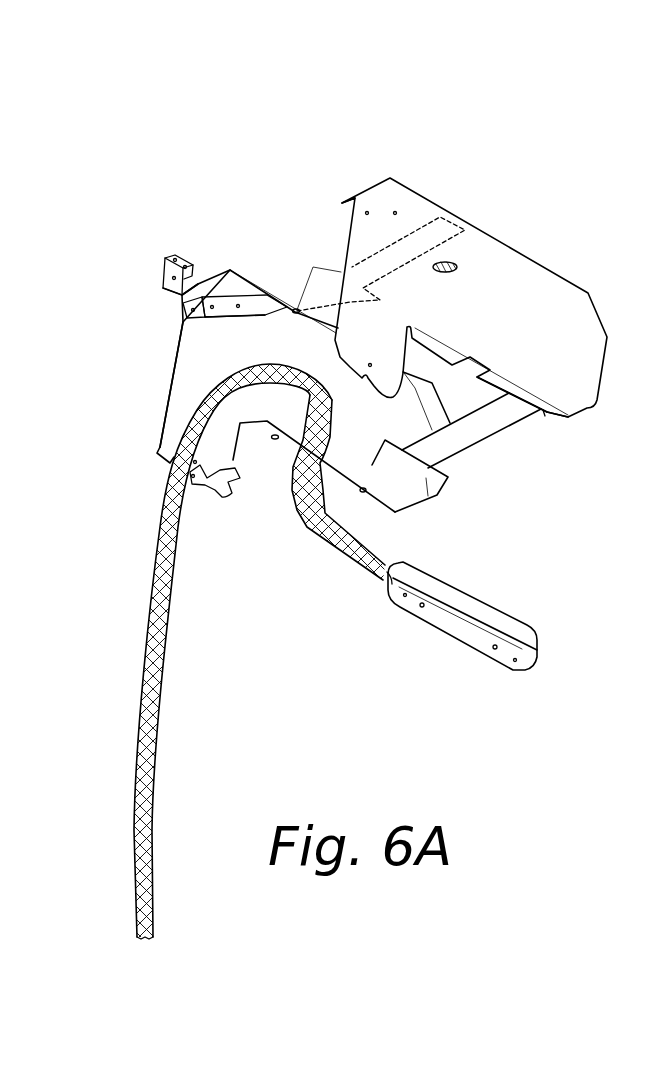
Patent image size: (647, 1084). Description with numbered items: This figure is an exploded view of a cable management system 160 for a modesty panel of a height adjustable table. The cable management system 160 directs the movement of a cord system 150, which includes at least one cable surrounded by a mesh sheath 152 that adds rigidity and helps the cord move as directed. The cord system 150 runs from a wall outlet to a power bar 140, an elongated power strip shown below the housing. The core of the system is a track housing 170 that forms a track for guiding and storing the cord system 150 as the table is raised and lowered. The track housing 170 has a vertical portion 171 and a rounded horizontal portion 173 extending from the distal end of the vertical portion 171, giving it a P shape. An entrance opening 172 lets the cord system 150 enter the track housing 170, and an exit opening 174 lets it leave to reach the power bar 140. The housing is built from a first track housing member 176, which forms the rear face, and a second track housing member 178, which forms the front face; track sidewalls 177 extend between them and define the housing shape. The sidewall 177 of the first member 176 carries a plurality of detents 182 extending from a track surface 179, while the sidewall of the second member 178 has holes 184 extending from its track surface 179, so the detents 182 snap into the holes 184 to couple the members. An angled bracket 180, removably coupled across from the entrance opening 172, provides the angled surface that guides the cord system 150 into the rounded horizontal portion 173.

The power bar 140 is at (463, 623).
The cord system 150 is at (163, 673).
The sheath 152 is at (162, 598).
The cable management system 160 is at (297, 367).
The track housing 170 is at (370, 315).
The vertical portion 171 is at (168, 420).
The entrance opening 172 is at (172, 445).
The rounded horizontal portion 173 is at (572, 402).
The exit opening 174 is at (321, 465).
The first track housing member 176 is at (547, 281).
The track sidewall 177 is at (257, 292).
The second track housing member 178 is at (168, 392).
The track surface 179 is at (192, 340).
The angled bracket 180 is at (254, 302).
The detents 182 is at (520, 396).
The holes 184 is at (296, 308).